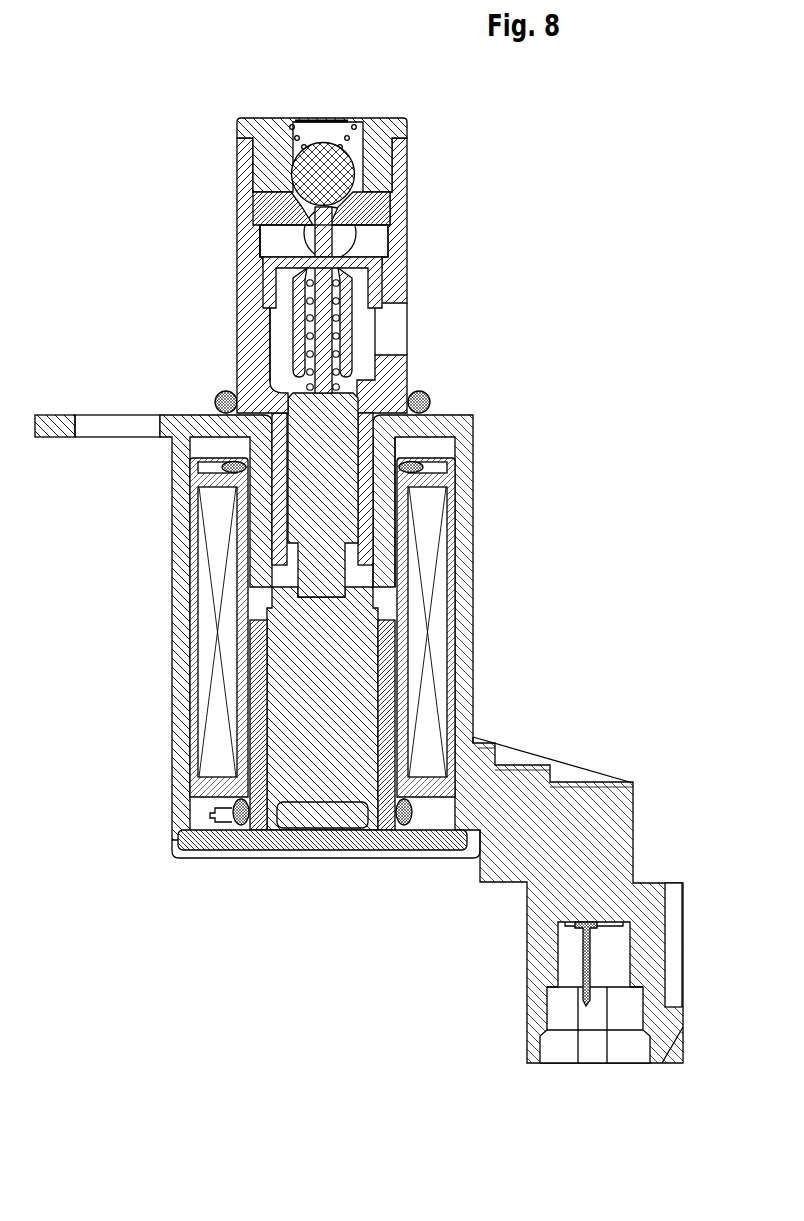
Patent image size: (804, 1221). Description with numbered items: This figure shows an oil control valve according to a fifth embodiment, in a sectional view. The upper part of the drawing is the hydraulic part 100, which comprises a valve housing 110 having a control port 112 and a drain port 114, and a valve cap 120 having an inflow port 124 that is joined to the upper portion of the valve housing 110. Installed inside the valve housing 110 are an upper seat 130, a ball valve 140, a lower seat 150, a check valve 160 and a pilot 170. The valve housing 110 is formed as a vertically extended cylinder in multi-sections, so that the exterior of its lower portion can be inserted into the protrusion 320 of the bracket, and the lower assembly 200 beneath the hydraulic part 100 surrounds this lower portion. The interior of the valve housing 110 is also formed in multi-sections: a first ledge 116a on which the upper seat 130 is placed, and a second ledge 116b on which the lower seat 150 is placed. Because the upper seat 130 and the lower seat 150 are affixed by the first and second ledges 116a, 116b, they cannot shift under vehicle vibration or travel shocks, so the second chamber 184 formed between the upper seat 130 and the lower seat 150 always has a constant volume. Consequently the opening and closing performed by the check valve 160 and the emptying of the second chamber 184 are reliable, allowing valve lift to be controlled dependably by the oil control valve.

The hydraulic part 100 is at (266, 103).
The valve housing 110 is at (237, 200).
The control port 112 is at (363, 242).
The drain port 114 is at (408, 336).
The first ledge 116a is at (253, 212).
The second ledge 116b is at (268, 300).
The valve cap 120 is at (237, 124).
The inflow port 124 is at (353, 118).
The upper seat 130 is at (382, 208).
The ball valve 140 is at (343, 170).
The lower seat 150 is at (387, 274).
The check valve 160 is at (296, 336).
The pilot 170 is at (370, 413).
The second chamber 184 is at (283, 242).
The solenoid actuator 200 is at (116, 612).
The protrusion 320 is at (387, 510).